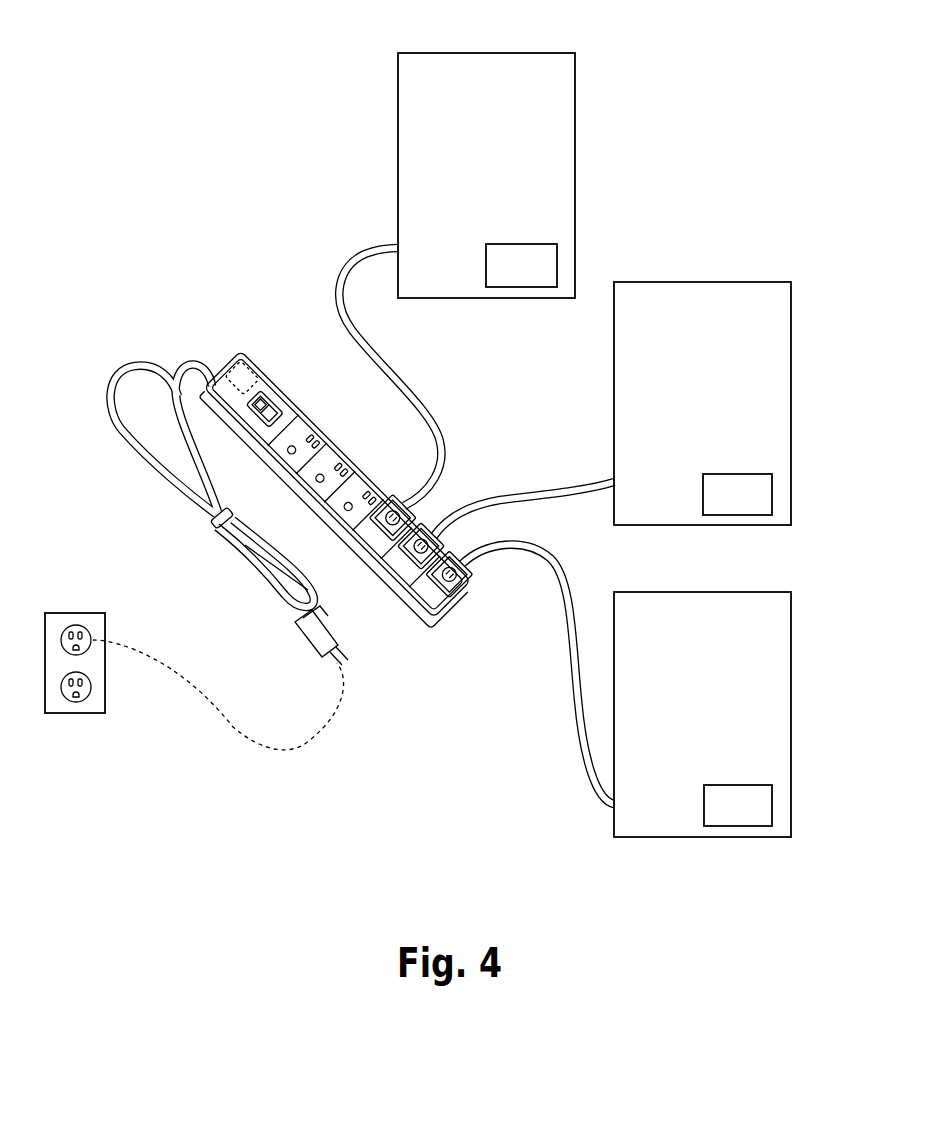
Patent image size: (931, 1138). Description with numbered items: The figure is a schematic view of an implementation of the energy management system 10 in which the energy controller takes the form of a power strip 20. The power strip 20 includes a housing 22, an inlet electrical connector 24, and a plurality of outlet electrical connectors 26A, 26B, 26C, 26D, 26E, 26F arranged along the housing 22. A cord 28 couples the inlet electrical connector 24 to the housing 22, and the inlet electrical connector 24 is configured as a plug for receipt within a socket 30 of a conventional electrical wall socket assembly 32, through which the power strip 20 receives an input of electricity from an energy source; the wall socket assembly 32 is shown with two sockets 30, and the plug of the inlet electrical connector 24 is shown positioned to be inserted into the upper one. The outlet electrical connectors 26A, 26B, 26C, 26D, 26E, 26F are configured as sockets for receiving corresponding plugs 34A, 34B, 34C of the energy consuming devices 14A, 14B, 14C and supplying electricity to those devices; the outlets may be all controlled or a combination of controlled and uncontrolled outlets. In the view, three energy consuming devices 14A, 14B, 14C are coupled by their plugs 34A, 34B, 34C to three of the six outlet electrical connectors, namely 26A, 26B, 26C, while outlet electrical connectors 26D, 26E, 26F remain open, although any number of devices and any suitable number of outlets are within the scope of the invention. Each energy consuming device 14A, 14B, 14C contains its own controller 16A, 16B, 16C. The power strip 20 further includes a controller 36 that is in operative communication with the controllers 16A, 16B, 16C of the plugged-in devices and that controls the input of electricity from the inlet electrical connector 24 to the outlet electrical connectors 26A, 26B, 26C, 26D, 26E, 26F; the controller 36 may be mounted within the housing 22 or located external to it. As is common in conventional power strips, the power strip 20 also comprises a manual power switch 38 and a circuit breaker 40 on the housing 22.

The power management system 10 is at (164, 163).
The energy consuming device 14A is at (755, 590).
The energy consuming device 14B is at (750, 280).
The energy consuming device 14C is at (575, 117).
The controller 16A is at (772, 803).
The controller 16B is at (772, 483).
The controller 16C is at (556, 253).
The power strip 20 is at (230, 346).
The housing 22 is at (246, 352).
The inlet electrical connector 24 is at (330, 665).
The outlet electrical connector 26A is at (447, 617).
The outlet electrical connector 26B is at (396, 593).
The outlet electrical connector 26C is at (362, 553).
The outlet electrical connector 26D is at (362, 492).
The outlet electrical connector 26E is at (340, 467).
The outlet electrical connector 26F is at (323, 437).
The cord 28 is at (141, 455).
The socket 30 is at (61, 692).
The electrical wall socket assembly 32 is at (61, 604).
The plug 34A is at (470, 583).
The plug 34B is at (440, 538).
The plug 34C is at (428, 512).
The controller 36 is at (263, 364).
The manual power switch 38 is at (251, 418).
The circuit breaker 40 is at (283, 400).